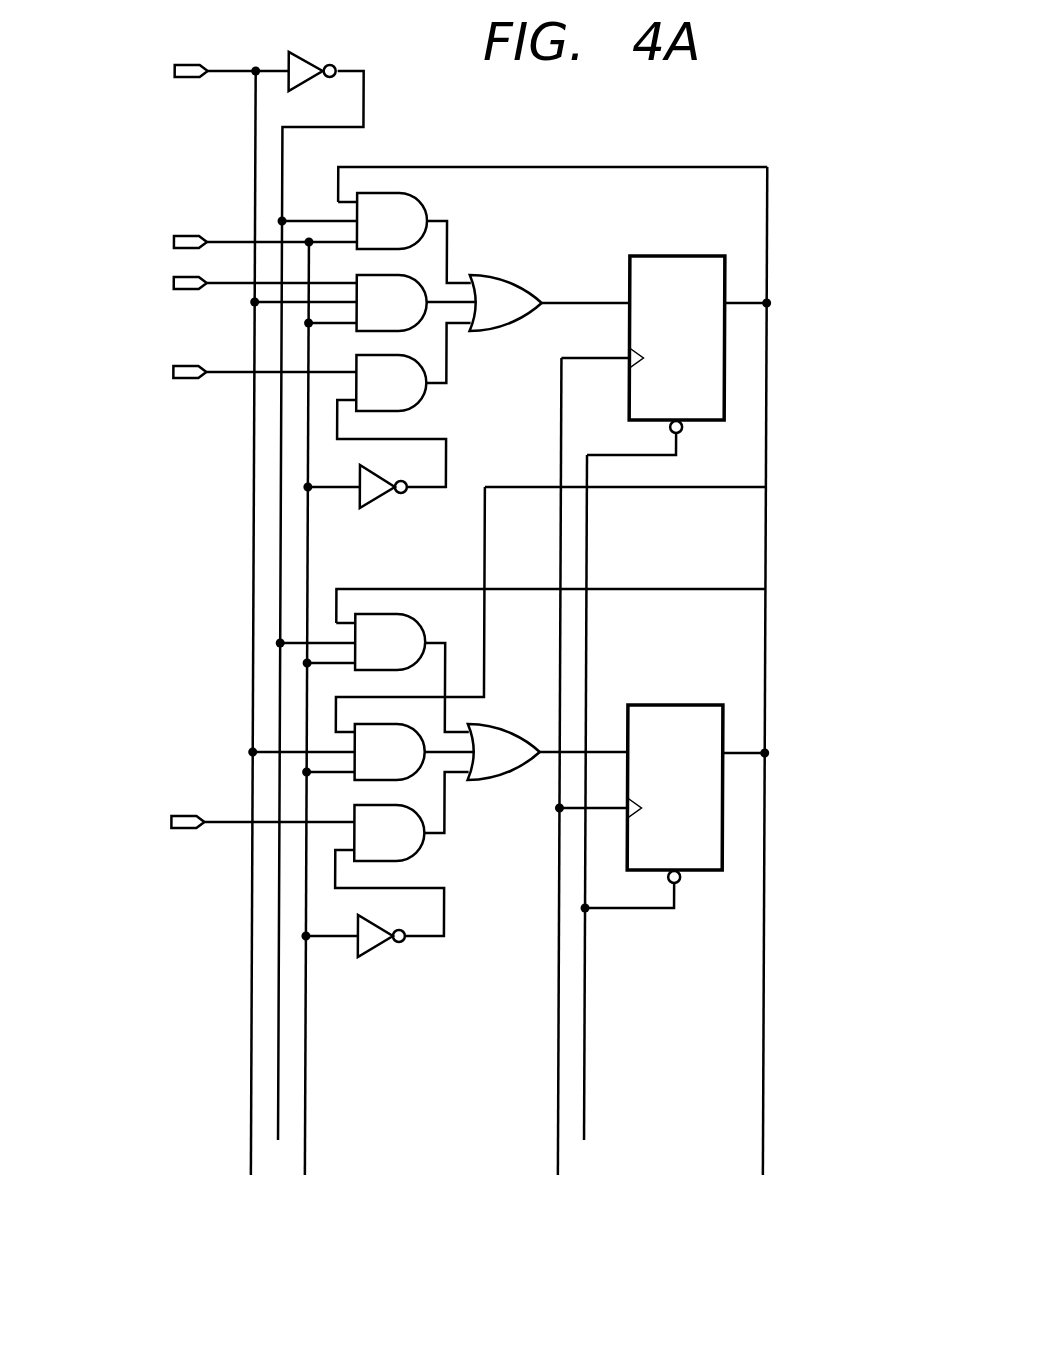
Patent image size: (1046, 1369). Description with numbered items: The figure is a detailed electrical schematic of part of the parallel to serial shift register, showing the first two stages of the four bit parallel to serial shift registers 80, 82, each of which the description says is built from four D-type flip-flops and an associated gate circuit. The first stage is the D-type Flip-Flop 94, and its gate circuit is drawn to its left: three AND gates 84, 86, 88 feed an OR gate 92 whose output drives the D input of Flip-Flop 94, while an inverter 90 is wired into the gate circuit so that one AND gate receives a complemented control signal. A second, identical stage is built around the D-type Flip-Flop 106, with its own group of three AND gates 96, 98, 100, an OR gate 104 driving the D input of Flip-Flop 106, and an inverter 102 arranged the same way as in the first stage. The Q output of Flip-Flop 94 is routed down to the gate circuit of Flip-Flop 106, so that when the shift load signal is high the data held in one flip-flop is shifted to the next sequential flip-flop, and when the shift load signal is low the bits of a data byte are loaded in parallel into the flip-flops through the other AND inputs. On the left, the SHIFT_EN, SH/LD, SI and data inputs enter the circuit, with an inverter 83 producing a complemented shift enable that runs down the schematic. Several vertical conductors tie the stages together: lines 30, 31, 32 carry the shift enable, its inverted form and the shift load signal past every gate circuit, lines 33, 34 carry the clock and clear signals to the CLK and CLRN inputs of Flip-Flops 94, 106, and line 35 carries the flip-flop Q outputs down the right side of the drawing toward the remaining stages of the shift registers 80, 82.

The SHIFT_EN bus line 30 is at (253, 639).
The inverted shift enable line 31 is at (314, 622).
The SH/LD bus line 32 is at (307, 725).
The clock line 33 is at (560, 783).
The clear line 34 is at (586, 814).
The flip-flop output line 35 is at (765, 687).
The four bit parallel to serial shift register 80 is at (828, 192).
The four bit parallel to serial shift register 82 is at (441, 611).
The inverter 83 is at (303, 70).
The AND gate 84 is at (367, 236).
The AND gate 86 is at (367, 318).
The AND gate 88 is at (367, 398).
The inverter 90 is at (373, 497).
The OR gate 92 is at (502, 300).
The D-type Flip-Flop 94 is at (678, 277).
The AND gate 96 is at (367, 657).
The AND gate 98 is at (367, 767).
The AND gate 100 is at (366, 848).
The inverter 102 is at (372, 946).
The OR gate 104 is at (506, 752).
The D-type Flip-Flop 106 is at (676, 725).